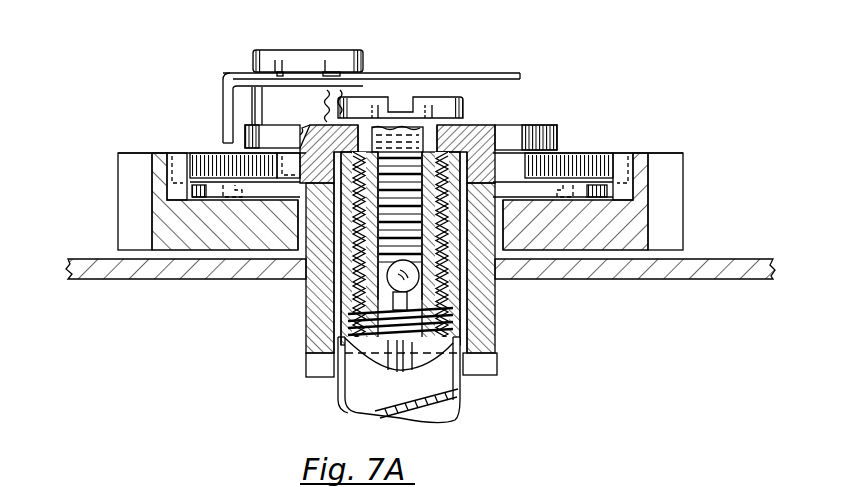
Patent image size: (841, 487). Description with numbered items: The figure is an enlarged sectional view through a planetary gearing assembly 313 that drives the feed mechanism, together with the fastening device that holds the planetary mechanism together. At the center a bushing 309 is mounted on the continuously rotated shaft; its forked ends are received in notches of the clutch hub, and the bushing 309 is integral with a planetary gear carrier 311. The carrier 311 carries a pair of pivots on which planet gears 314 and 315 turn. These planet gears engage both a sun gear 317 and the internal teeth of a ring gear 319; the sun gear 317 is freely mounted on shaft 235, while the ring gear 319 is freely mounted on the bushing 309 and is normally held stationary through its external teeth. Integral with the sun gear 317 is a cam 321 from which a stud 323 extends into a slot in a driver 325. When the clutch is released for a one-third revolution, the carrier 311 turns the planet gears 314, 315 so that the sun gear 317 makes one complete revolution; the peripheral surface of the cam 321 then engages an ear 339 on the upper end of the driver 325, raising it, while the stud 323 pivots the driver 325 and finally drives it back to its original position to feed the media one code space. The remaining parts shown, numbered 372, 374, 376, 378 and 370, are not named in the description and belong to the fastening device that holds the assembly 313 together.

The planetary gearing assembly 313 is at (98, 40).
The stud 323 is at (253, 63).
The ear 339 is at (222, 110).
The planet gear 314 is at (203, 157).
The adjusting knob 372 is at (427, 97).
The driver 325 is at (520, 79).
The cam 321 is at (538, 125).
The planet gear 315 is at (587, 158).
The ring gear 319 is at (118, 202).
The planetary gear carrier 311 is at (213, 190).
The sun gear 317 is at (297, 180).
The ball 374 is at (388, 281).
The shaft 235 is at (343, 393).
The threaded screw 376 is at (403, 228).
The bushing 309 is at (460, 245).
The lower cup 378 is at (470, 353).
The mounting plate 370 is at (415, 350).